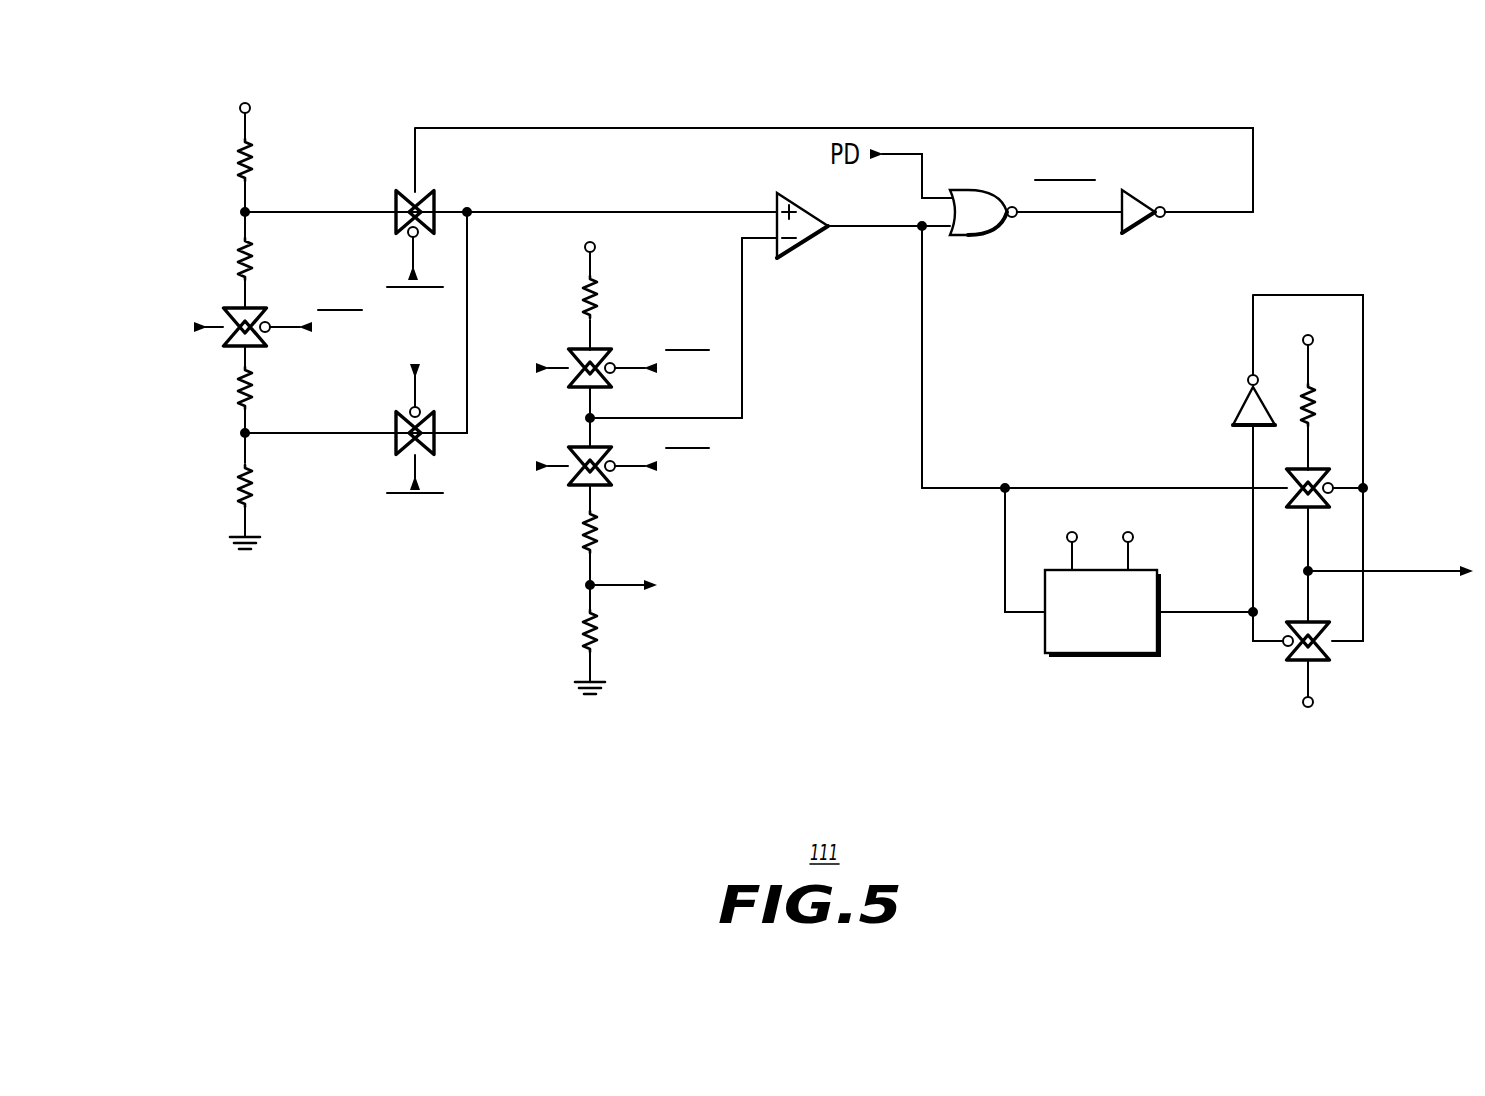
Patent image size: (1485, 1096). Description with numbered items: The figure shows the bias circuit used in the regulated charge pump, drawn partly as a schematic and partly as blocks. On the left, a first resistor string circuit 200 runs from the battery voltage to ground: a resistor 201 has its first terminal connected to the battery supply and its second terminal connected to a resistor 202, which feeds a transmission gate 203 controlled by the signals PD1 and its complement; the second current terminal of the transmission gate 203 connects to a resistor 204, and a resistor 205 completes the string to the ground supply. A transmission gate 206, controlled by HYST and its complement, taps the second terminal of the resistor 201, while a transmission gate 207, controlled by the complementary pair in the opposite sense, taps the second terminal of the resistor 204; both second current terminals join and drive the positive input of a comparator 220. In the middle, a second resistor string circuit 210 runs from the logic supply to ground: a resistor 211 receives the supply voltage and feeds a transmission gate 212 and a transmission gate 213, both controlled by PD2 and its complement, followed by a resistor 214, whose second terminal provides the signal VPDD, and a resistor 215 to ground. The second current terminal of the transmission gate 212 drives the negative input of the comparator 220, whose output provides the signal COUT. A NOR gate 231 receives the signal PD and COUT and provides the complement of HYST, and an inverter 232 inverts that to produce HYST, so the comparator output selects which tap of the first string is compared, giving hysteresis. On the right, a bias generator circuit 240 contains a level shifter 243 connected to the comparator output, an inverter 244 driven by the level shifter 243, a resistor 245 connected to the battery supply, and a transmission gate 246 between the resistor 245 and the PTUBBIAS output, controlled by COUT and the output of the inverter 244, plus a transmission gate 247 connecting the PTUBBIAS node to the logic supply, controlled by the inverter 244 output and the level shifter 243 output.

The first resistor string circuit 200 is at (204, 578).
The resistor 201 is at (239, 143).
The resistor 202 is at (239, 243).
The transmission gate 203 is at (257, 308).
The resistor 204 is at (252, 394).
The resistor 205 is at (250, 478).
The transmission gate 206 is at (430, 197).
The transmission gate 207 is at (395, 418).
The second resistor string circuit 210 is at (480, 652).
The resistor 211 is at (598, 308).
The transmission gate 212 is at (607, 352).
The transmission gate 213 is at (578, 488).
The resistor 214 is at (600, 538).
The resistor 215 is at (584, 624).
The comparator 220 is at (812, 240).
The NOR gate 231 is at (1000, 228).
The inverter 232 is at (1143, 226).
The bias generator circuit 240 is at (1016, 700).
The level shifter 243 is at (1100, 660).
The inverter 244 is at (1243, 400).
The resistor 245 is at (1310, 388).
The transmission gate 246 is at (1318, 470).
The transmission gate 247 is at (1292, 662).